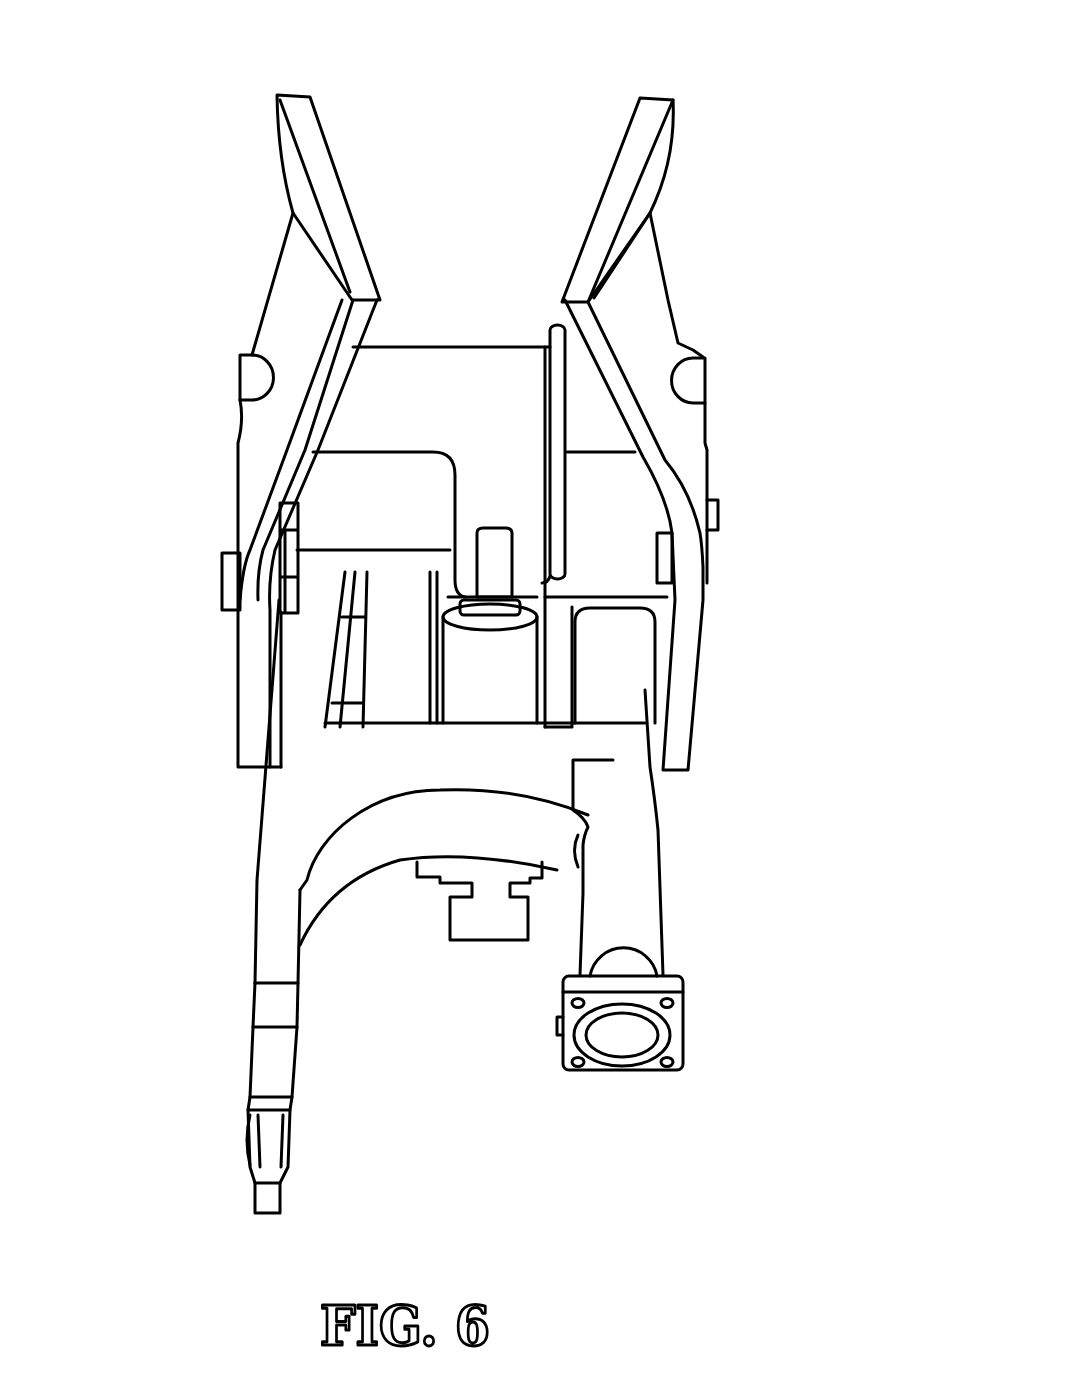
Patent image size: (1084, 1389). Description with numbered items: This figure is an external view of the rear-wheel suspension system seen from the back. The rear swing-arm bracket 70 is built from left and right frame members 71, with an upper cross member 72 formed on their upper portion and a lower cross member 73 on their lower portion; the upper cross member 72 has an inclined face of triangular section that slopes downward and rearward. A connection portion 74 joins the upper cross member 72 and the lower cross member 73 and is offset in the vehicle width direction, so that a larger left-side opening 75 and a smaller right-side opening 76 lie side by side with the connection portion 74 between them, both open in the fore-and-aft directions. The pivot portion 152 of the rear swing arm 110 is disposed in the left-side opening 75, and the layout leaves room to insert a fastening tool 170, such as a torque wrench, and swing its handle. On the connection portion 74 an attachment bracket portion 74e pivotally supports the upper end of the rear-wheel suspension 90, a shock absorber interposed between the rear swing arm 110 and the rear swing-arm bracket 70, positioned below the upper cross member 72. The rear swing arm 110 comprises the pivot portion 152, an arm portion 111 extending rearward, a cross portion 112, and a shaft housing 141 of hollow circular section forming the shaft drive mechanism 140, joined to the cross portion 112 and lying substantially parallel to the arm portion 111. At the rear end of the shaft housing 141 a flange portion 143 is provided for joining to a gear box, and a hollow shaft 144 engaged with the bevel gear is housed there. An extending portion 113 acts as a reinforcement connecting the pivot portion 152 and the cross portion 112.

The rear swing-arm bracket 70 is at (746, 100).
The frame member 71 is at (298, 242).
The upper cross member 72 is at (428, 365).
The fastening tool 170 is at (558, 323).
The left-side opening 75 is at (337, 470).
The connection portion 74 is at (477, 515).
The right-side opening 76 is at (638, 510).
The pivot portion 152 is at (320, 567).
The attachment bracket portion 74e is at (600, 597).
The extending portion 113 is at (393, 642).
The lower cross member 73 is at (350, 687).
The rear-wheel suspension 90 is at (510, 668).
The cross portion 112 is at (310, 797).
The shaft housing 141 is at (633, 855).
The shaft drive mechanism 140 is at (813, 867).
The flange portion 143 is at (683, 1023).
The shaft 144 is at (622, 1047).
The rear swing arm 110 is at (203, 1013).
The arm portion 111 is at (250, 1147).